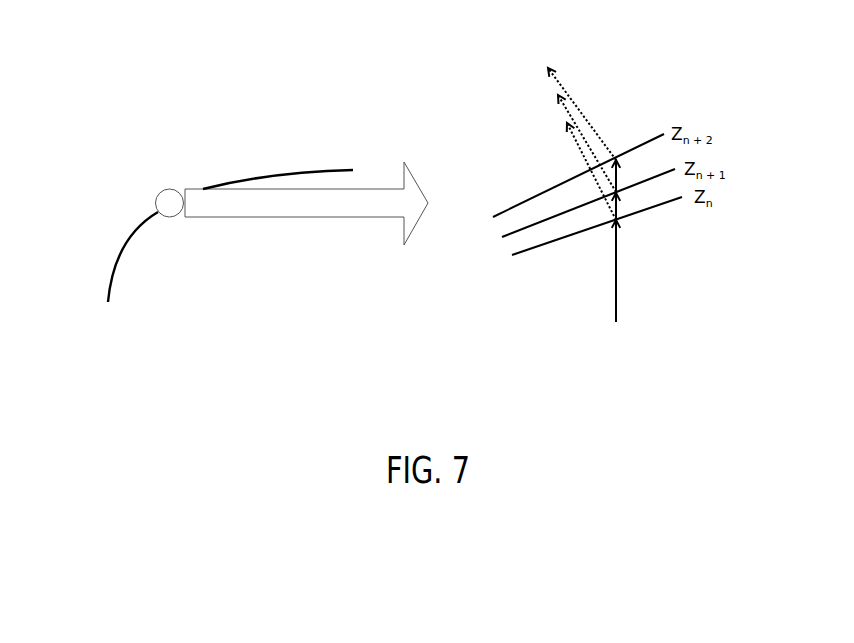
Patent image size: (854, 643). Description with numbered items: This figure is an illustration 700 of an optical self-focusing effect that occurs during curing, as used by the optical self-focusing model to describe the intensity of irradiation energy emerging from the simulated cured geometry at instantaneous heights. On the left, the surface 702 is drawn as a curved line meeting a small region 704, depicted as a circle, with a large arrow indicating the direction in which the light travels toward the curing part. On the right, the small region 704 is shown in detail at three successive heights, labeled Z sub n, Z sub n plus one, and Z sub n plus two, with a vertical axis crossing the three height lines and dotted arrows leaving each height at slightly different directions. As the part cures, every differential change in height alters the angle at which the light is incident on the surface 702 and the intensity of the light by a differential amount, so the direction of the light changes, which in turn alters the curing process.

The illustration 700 is at (170, 96).
The surface 702 is at (118, 248).
The small region 704 is at (156, 201).